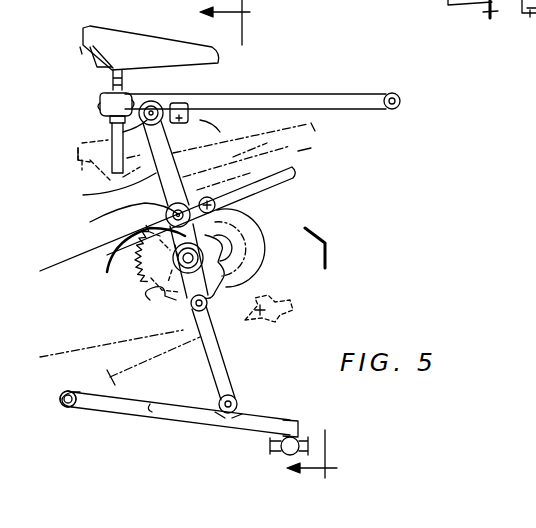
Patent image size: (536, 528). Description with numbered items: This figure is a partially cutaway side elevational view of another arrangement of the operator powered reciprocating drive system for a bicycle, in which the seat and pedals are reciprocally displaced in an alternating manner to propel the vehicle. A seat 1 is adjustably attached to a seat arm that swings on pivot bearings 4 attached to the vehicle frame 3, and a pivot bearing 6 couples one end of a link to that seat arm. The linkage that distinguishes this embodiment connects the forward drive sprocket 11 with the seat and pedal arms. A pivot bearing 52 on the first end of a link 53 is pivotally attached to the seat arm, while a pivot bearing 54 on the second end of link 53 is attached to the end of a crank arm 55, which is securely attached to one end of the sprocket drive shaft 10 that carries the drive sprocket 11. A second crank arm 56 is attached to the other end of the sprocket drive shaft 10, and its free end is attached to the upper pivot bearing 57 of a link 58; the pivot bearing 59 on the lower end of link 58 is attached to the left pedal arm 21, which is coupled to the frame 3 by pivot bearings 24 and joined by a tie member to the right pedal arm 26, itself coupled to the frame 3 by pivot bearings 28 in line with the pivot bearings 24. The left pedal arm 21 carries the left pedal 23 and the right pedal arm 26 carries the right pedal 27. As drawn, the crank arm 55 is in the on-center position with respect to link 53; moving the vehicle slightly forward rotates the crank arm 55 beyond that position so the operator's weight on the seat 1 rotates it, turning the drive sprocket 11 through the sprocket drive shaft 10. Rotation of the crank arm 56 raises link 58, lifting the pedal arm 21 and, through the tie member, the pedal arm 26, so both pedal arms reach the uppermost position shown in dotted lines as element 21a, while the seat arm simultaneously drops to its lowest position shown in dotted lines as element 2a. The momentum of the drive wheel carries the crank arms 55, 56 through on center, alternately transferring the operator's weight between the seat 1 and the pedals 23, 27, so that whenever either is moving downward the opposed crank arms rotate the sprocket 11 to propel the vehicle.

The seat 1 is at (100, 27).
The seat arm lowest position 2a is at (295, 148).
The vehicle frame 3 is at (280, 195).
The pivot bearings 4 is at (397, 72).
The pivot bearing 6 is at (257, 241).
The sprocket drive shaft 10 is at (250, 243).
The drive sprocket 11 is at (132, 284).
The left pedal arm 21 is at (185, 421).
The pedal arm uppermost position 21a is at (232, 326).
The left pedal 23 is at (268, 442).
The pivot bearings 24 is at (62, 399).
The pivot bearings 28 is at (68, 399).
The right pedal arm 26 is at (118, 417).
The right pedal 27 is at (293, 93).
The pivot bearing 52 is at (110, 131).
The link 53 is at (101, 175).
The pivot bearing 54 is at (113, 221).
The crank arm 55 is at (125, 259).
The second crank arm 56 is at (241, 262).
The upper pivot bearing 57 is at (190, 306).
The link 58 is at (212, 368).
The pivot bearing 59 is at (236, 398).